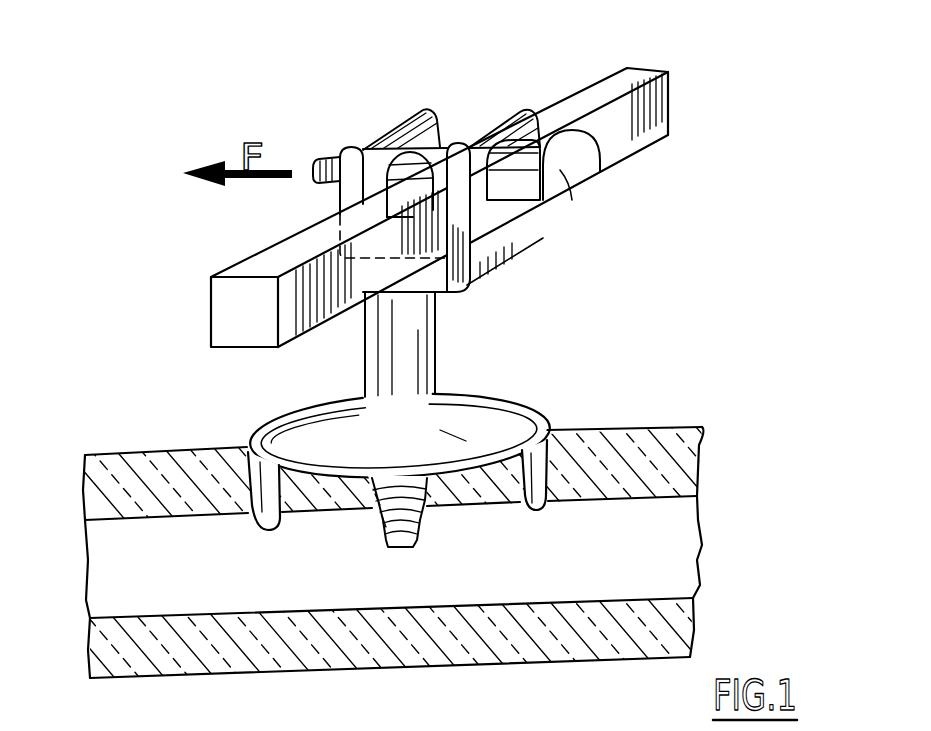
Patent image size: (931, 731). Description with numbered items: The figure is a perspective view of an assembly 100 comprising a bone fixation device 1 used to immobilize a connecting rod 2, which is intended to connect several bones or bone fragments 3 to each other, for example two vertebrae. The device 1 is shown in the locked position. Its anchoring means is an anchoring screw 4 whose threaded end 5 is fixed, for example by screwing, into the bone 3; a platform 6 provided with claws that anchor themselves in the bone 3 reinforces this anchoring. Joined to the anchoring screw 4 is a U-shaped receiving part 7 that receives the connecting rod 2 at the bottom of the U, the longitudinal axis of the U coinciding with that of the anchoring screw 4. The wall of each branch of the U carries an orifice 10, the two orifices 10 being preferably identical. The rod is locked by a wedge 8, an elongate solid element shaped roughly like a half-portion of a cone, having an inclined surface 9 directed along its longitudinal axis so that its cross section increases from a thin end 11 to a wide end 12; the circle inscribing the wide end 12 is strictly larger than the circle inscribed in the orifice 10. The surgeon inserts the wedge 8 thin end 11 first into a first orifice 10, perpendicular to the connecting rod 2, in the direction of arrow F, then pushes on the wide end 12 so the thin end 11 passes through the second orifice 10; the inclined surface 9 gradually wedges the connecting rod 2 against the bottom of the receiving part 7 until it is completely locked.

The device 1 is at (347, 112).
The connecting rod 2 is at (243, 310).
The bone 3 is at (712, 530).
The anchoring screw 4 is at (400, 350).
The threaded end 5 is at (405, 548).
The platform 6 is at (535, 410).
The receiving part 7 is at (477, 117).
The wedge 8 is at (560, 157).
The inclined surface 9 is at (441, 145).
The orifice 10 is at (393, 187).
The thin end 11 is at (305, 165).
The wide end 12 is at (567, 180).
The assembly 100 is at (600, 60).